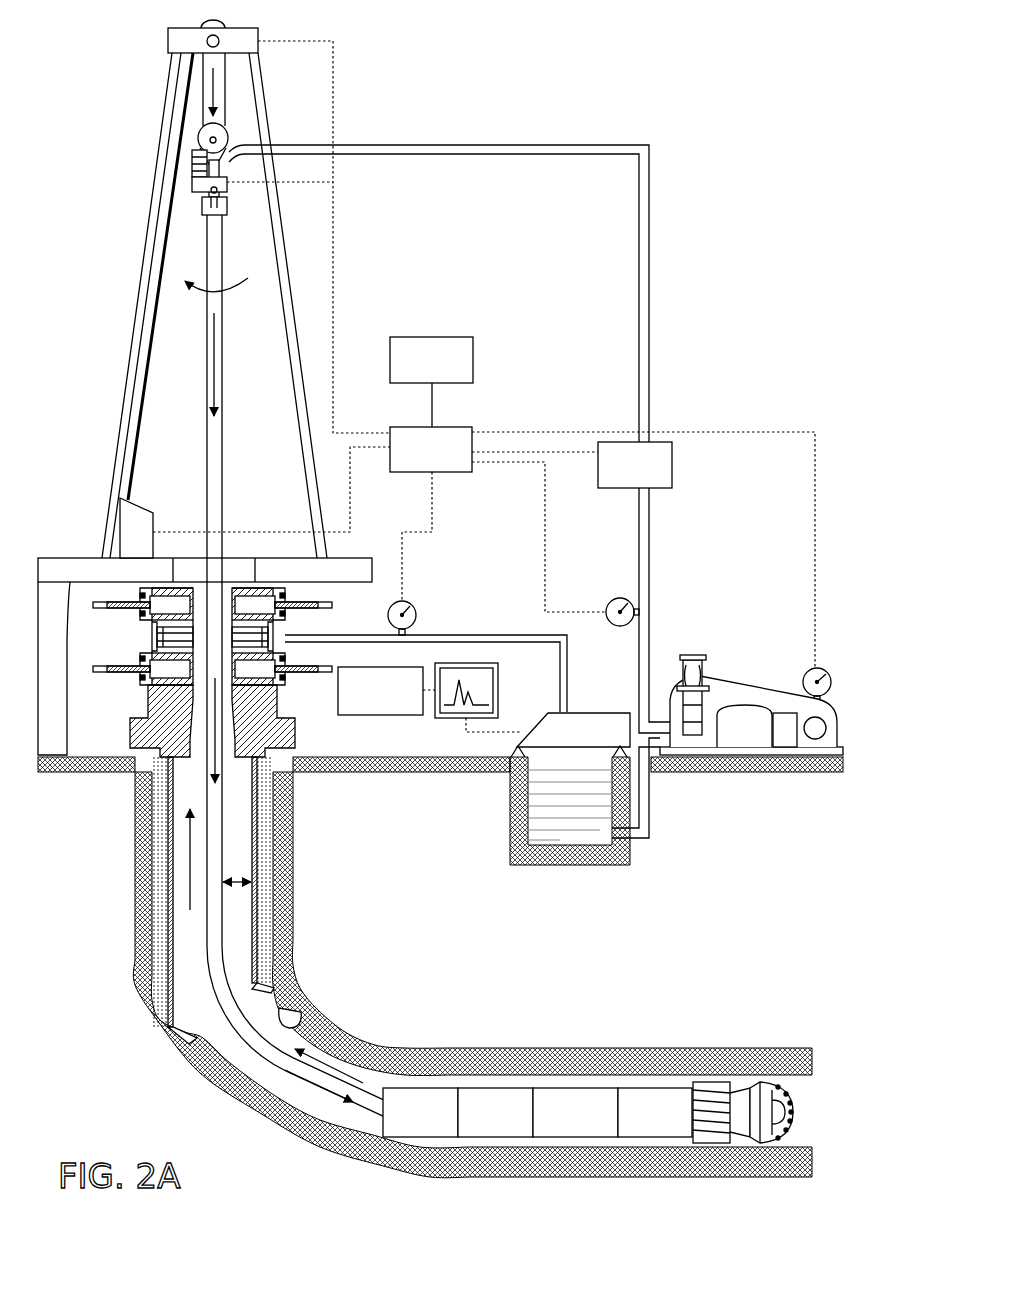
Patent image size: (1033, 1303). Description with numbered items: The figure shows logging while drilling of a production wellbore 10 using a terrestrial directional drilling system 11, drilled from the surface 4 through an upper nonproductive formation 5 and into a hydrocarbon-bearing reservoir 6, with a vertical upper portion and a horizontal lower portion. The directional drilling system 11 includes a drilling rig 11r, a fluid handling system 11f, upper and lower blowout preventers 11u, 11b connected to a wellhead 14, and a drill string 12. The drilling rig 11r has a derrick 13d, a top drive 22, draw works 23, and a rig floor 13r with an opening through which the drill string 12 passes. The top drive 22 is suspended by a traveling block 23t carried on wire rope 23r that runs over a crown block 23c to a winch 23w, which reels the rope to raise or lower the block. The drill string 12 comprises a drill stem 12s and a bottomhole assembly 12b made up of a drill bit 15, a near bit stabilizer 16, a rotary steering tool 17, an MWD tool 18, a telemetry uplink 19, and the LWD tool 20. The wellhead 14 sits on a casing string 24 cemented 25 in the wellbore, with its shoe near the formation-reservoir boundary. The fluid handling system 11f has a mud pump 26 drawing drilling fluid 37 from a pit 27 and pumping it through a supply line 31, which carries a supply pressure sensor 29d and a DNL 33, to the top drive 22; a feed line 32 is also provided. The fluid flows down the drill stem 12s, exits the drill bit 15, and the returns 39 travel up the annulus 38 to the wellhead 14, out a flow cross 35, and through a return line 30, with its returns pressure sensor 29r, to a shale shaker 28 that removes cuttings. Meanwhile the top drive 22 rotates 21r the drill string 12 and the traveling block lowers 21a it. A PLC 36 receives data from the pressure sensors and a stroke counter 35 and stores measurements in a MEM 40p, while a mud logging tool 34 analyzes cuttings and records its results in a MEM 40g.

The surface 4 is at (313, 757).
The upper nonproductive formation 5 is at (293, 822).
The reservoir 6 is at (290, 1143).
The production wellbore 10 is at (300, 1010).
The directional drilling system 11 is at (76, 53).
The drilling rig 11r is at (137, 133).
The fluid handling system 11f is at (753, 166).
The upper blowout preventer 11u is at (132, 606).
The lower blowout preventer 11b is at (118, 676).
The drill string 12 is at (749, 925).
The bottomhole assembly 12b is at (724, 1002).
The drill stem 12s is at (224, 460).
The derrick 13d is at (143, 262).
The rig floor 13r is at (60, 558).
The wellhead 14 is at (150, 740).
The drill bit 15 is at (760, 1081).
The near bit stabilizer 16 is at (713, 1081).
The rotary steering tool 17 is at (658, 1090).
The measurement while drilling tool 18 is at (576, 1090).
The telemetry uplink 19 is at (497, 1090).
The LWD tool 20 is at (422, 1090).
The lowering 21a is at (225, 85).
The rotation 21r is at (248, 280).
The top drive 22 is at (192, 165).
The draw works 23 is at (172, 403).
The crown block 23c is at (168, 41).
The wire rope 23r is at (154, 349).
The traveling block 23t is at (226, 130).
The winch 23w is at (142, 514).
The casing string 24 is at (188, 1043).
The cement 25 is at (160, 963).
The mud pump 26 is at (757, 690).
The pit 27 is at (518, 818).
The shale shaker 28 is at (597, 715).
The returns pressure sensor 29r is at (414, 603).
The supply pressure sensor 29d is at (608, 604).
The return line 30 is at (498, 634).
The supply line 31 is at (650, 282).
The feed line 32 is at (650, 816).
The DNL 33 is at (672, 478).
The mud logging tool 34 is at (498, 683).
The stroke counter 35 is at (157, 637).
The PLC 36 is at (458, 428).
The drilling fluid 37 is at (218, 412).
The annulus 38 is at (246, 878).
The returns 39 is at (190, 867).
The MEM 40g is at (400, 716).
The MEM 40p is at (473, 357).